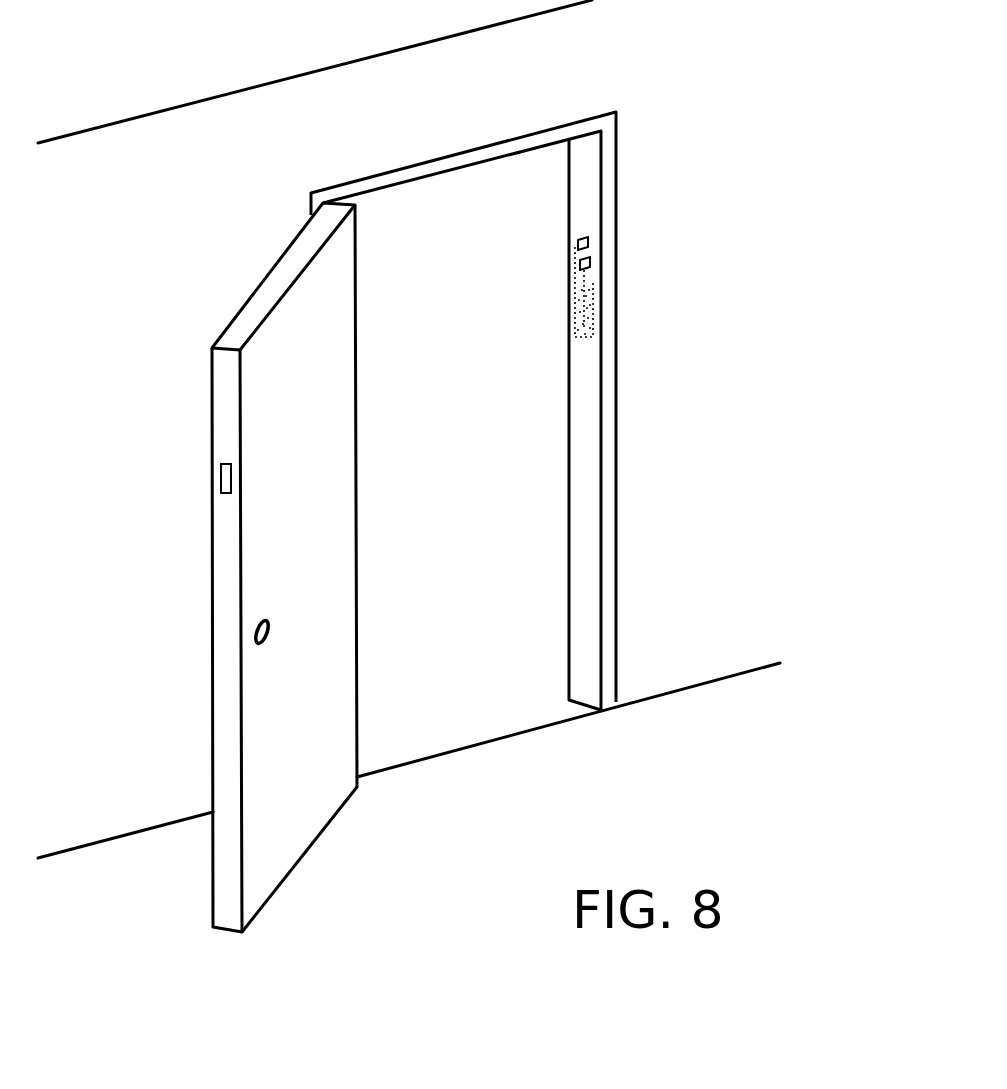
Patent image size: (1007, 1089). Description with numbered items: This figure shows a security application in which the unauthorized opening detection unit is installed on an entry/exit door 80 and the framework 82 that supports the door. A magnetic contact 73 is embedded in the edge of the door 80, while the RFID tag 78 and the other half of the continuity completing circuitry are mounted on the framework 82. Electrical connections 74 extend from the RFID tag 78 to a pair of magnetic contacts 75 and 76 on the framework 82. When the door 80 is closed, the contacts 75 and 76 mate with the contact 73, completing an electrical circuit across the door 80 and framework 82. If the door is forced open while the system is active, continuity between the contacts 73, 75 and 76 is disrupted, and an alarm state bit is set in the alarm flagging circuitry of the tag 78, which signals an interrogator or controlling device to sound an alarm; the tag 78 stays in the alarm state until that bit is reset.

The magnetic contact 73 is at (222, 473).
The electrical connections 74 is at (575, 287).
The magnetic contact 75 is at (587, 240).
The magnetic contact 76 is at (590, 261).
The RFID tag 78 is at (593, 318).
The entry/exit door 80 is at (273, 287).
The framework 82 is at (587, 475).